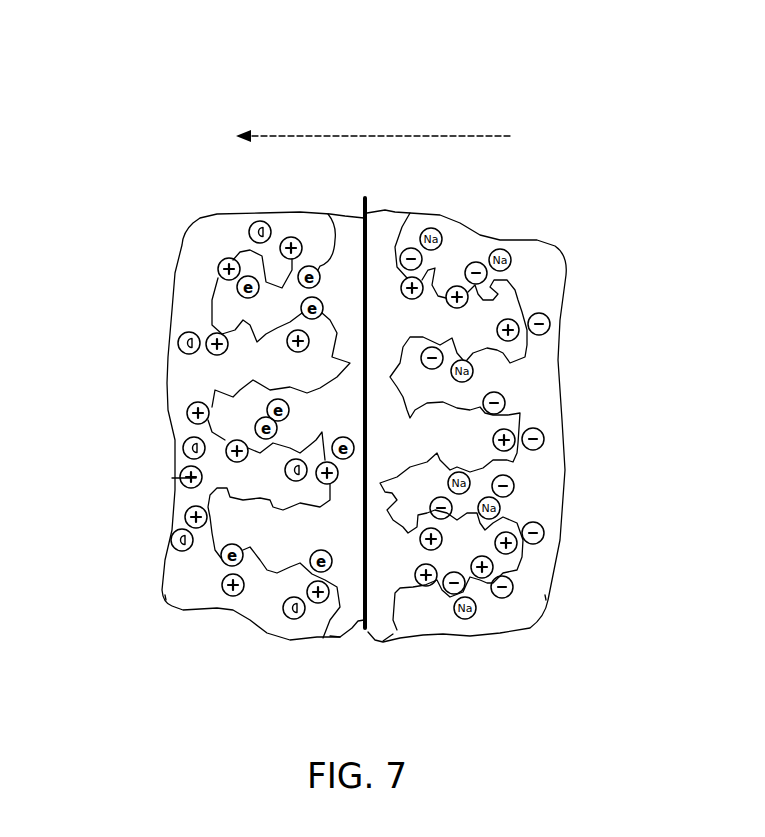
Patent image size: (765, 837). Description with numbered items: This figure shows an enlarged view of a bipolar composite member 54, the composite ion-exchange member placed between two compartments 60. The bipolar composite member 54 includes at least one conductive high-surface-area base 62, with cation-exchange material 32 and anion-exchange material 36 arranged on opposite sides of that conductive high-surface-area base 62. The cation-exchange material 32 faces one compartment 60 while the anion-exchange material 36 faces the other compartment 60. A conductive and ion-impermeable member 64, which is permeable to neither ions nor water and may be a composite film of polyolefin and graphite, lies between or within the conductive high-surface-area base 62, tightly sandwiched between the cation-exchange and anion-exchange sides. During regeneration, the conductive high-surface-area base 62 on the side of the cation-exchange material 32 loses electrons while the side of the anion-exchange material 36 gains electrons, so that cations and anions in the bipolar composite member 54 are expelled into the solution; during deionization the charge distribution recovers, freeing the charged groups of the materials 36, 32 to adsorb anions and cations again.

The bipolar composite member 54 is at (582, 58).
The anion-exchange material 36 is at (190, 382).
The cation-exchange material 32 is at (537, 383).
The compartment 60 is at (148, 589).
The conductive high-surface-area base 62 is at (335, 637).
The conductive and ion-impermeable member 64 is at (357, 634).